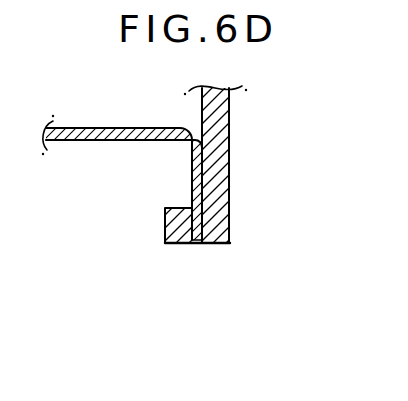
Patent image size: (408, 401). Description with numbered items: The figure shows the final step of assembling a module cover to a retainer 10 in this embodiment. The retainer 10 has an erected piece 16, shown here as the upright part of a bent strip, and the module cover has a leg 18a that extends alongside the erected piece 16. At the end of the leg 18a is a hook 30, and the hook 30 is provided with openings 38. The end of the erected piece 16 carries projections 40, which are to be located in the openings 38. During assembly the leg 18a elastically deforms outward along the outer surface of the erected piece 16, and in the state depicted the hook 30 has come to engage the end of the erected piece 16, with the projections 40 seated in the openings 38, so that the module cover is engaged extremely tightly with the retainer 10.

The retainer 10 is at (105, 126).
The erected piece 16 is at (192, 178).
The leg 18a is at (229, 171).
The hook 30 is at (176, 244).
The openings 38 is at (196, 244).
The projections 40 is at (229, 223).